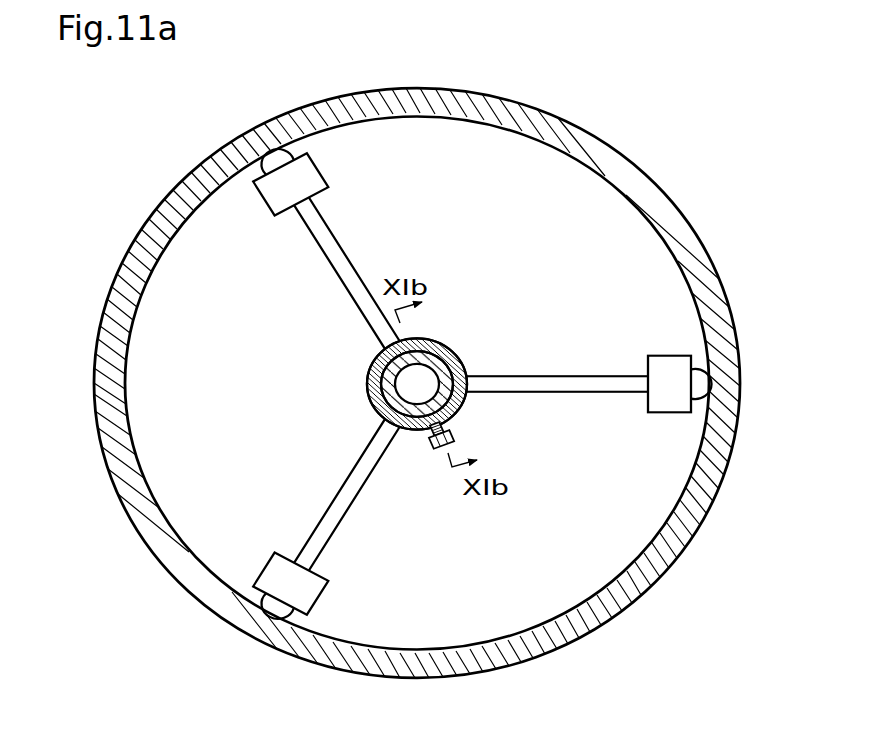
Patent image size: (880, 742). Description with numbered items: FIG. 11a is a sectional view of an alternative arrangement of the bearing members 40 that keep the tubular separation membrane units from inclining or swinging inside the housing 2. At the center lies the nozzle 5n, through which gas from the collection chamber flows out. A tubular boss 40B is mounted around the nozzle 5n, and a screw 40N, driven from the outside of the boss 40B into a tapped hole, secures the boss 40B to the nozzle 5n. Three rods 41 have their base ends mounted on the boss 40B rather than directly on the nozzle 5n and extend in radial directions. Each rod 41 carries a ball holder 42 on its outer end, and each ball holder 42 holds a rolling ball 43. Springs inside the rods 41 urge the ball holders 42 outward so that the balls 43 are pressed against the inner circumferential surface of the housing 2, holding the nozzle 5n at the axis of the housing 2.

The housing 2 is at (678, 203).
The bearing member 40 is at (467, 384).
The boss 40B is at (366, 386).
The screw 40N is at (428, 446).
The rod 41 is at (351, 299).
The ball holder 42 is at (322, 166).
The ball 43 is at (259, 170).
The nozzle 5n is at (423, 338).